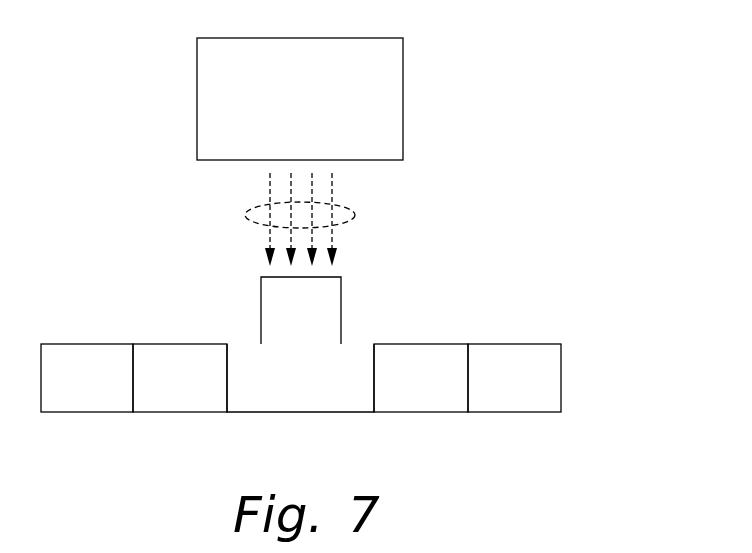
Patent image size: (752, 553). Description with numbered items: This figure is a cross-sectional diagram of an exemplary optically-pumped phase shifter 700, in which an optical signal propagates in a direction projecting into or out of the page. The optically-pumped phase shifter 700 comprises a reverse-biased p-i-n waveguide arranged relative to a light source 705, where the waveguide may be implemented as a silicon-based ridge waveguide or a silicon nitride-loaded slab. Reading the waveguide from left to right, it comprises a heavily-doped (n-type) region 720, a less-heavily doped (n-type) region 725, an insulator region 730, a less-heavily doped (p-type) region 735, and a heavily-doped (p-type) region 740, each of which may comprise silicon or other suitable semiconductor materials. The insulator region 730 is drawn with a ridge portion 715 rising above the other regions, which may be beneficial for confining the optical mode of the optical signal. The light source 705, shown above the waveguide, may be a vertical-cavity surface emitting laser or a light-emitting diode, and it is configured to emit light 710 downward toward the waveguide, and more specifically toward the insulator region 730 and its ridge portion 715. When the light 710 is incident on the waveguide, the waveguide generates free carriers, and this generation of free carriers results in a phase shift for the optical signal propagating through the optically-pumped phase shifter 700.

The optically-pumped phase shifter 700 is at (594, 104).
The light source 705 is at (403, 100).
The light 710 is at (355, 215).
The ridge portion 715 is at (341, 305).
The heavily-doped (n-type) region 720 is at (90, 412).
The less-heavily doped (n-type) region 725 is at (180, 412).
The insulator region 730 is at (300, 412).
The less-heavily doped (p-type) region 735 is at (425, 412).
The heavily-doped (p-type) region 740 is at (517, 412).